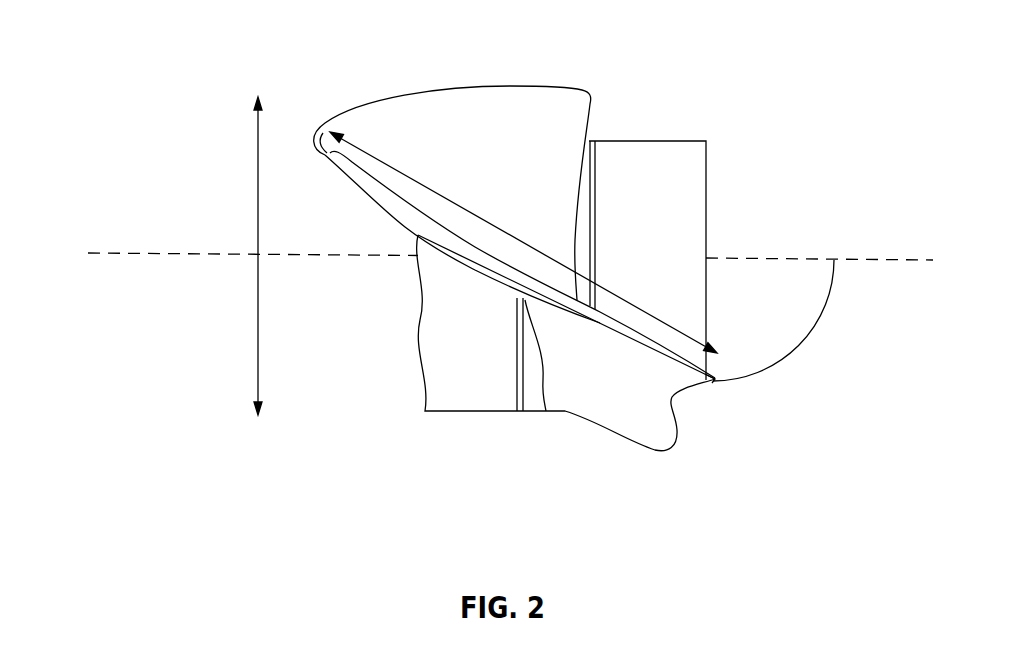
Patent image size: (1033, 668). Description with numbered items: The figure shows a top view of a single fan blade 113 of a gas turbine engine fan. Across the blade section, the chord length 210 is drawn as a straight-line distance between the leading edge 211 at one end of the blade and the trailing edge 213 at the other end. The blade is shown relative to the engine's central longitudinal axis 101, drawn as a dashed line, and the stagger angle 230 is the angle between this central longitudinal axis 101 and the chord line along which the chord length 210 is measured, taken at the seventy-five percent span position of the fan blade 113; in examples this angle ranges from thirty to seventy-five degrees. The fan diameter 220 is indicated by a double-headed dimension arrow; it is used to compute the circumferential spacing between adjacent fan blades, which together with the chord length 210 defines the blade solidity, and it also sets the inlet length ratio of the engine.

The central longitudinal axis 101 is at (110, 252).
The fan blade 113 is at (437, 90).
The chord length 210 is at (425, 185).
The leading edge 211 is at (328, 128).
The trailing edge 213 is at (673, 407).
The fan diameter 220 is at (257, 289).
The stagger angle 230 is at (797, 337).